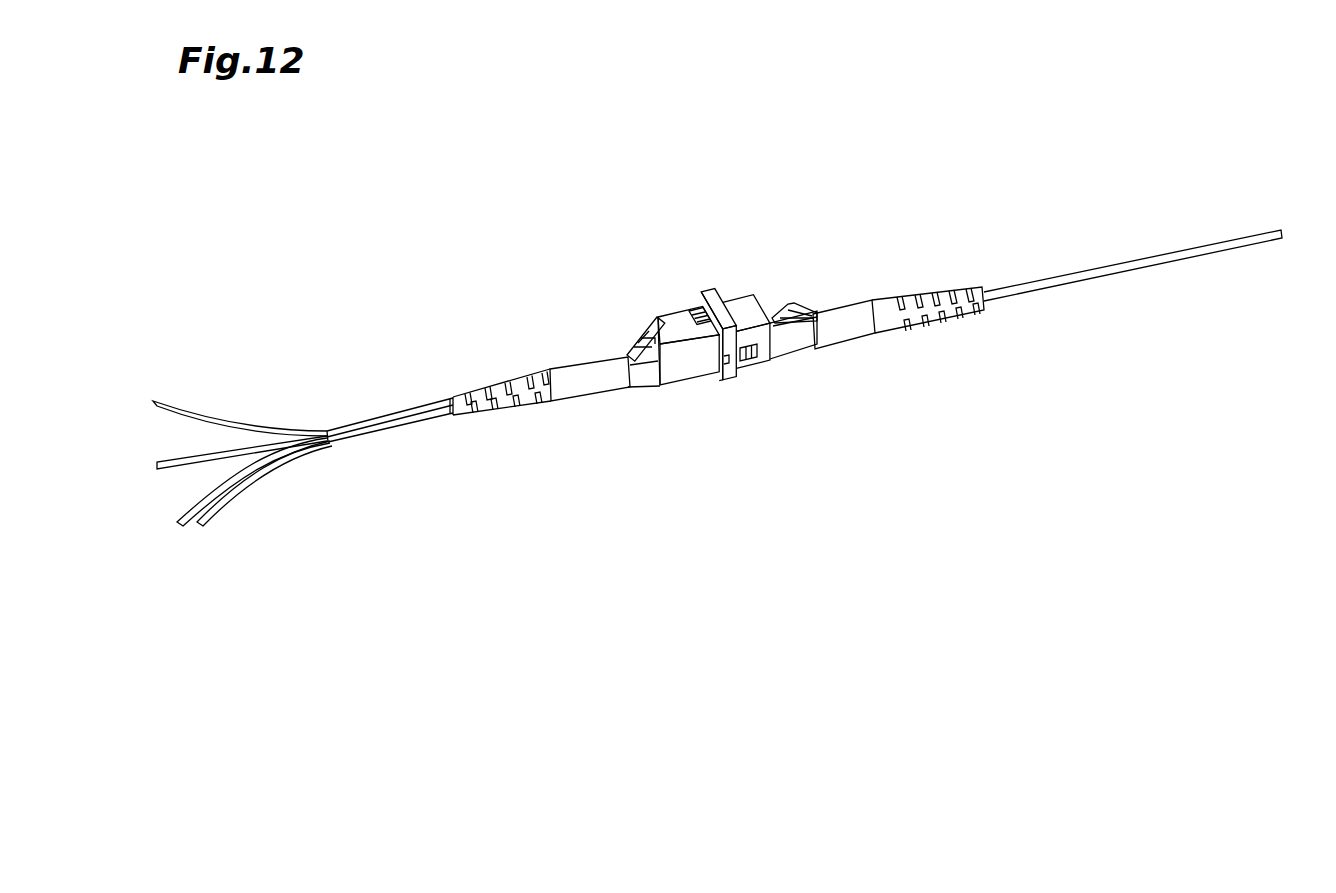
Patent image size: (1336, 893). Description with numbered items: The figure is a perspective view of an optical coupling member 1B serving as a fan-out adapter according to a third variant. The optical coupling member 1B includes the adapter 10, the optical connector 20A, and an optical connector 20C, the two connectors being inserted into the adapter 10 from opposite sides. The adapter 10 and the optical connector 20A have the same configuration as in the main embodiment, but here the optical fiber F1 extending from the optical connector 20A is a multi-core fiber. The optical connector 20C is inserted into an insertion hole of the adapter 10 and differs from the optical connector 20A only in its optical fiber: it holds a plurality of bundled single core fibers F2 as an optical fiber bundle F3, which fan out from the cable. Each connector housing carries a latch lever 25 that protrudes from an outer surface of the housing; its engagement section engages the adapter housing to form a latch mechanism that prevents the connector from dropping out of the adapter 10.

The optical coupling member 1B is at (902, 181).
The adapter 10 is at (734, 292).
The latch lever 25 is at (629, 347).
The optical connector 20C is at (641, 389).
The optical connector 20A is at (797, 361).
The optical fiber F1 is at (1085, 278).
The single core fibers F2 is at (193, 408).
The optical fiber bundle F3 is at (407, 428).